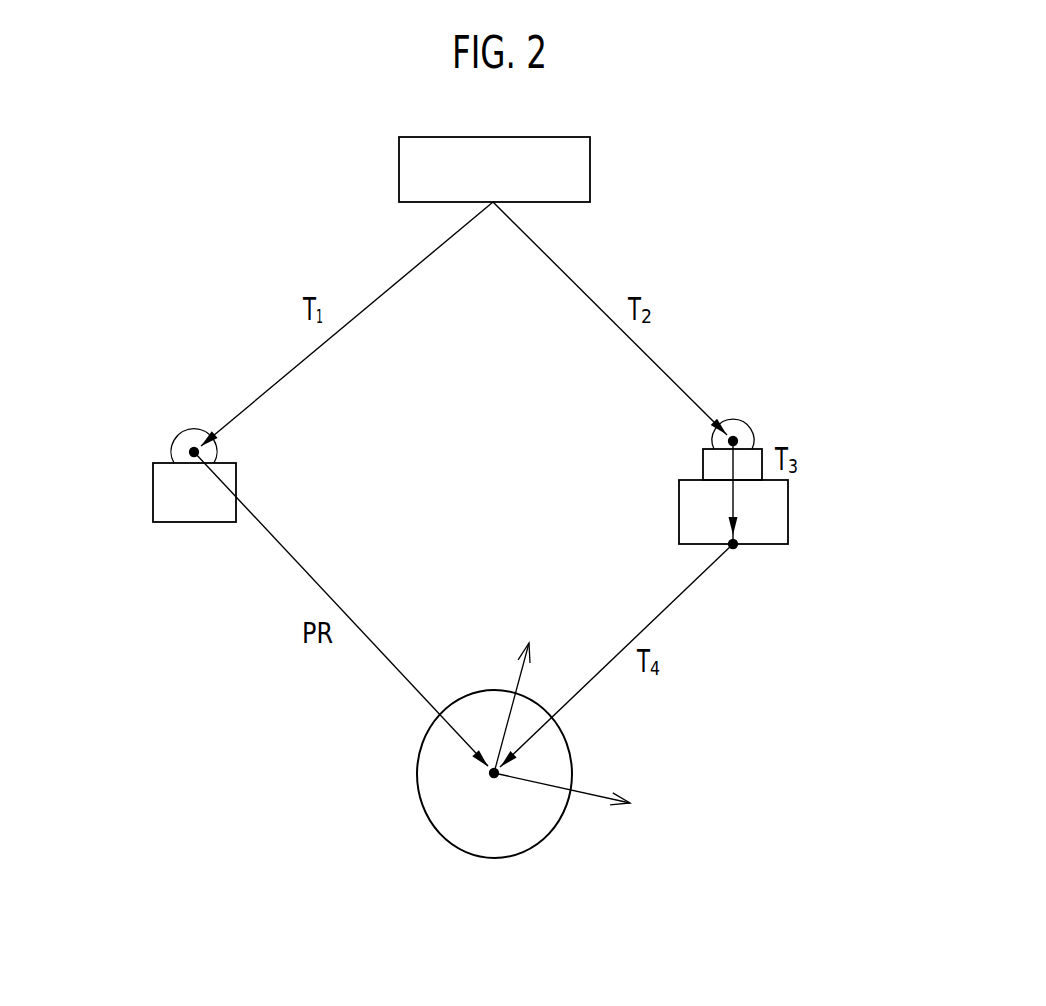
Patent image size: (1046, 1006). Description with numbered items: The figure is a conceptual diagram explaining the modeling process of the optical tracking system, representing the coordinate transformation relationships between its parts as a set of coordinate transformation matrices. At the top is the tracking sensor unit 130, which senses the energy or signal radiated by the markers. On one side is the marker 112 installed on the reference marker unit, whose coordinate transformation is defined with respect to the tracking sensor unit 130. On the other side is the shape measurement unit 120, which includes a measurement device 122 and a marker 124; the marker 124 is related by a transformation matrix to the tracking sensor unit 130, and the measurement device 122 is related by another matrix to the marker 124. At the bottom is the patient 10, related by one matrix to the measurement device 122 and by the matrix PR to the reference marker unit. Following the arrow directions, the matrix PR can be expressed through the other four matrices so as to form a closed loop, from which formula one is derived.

The patient 10 is at (423, 813).
The marker 112 is at (153, 492).
The shape measurement unit 120 is at (819, 458).
The measurement device 122 is at (791, 514).
The marker 124 is at (751, 429).
The tracking sensor unit 130 is at (590, 167).